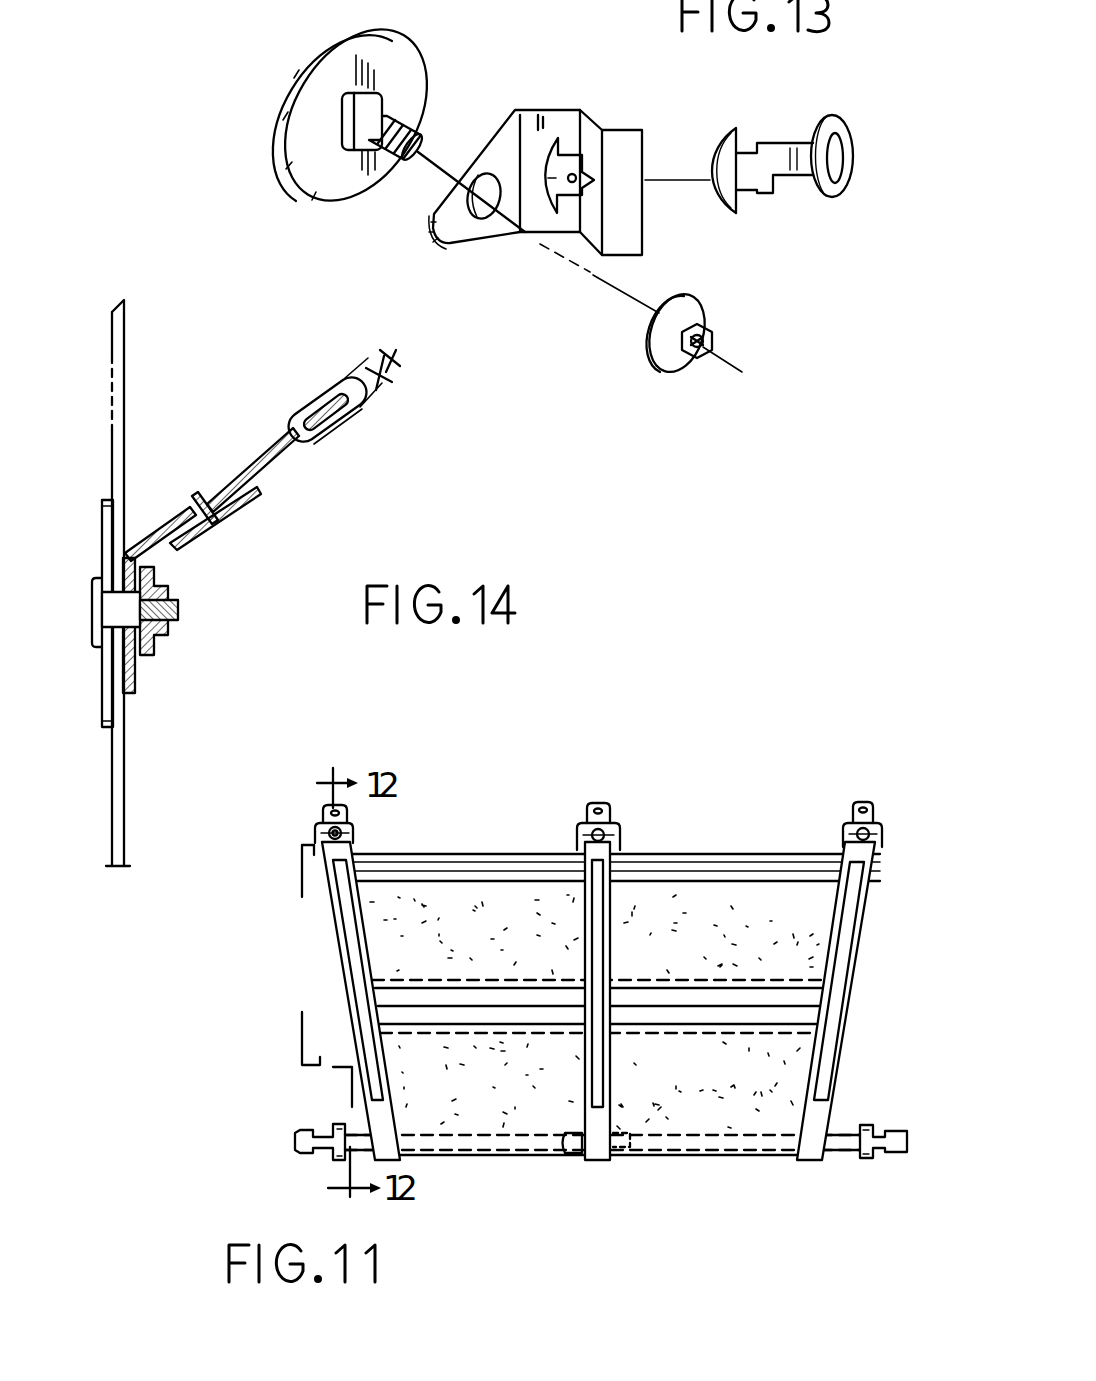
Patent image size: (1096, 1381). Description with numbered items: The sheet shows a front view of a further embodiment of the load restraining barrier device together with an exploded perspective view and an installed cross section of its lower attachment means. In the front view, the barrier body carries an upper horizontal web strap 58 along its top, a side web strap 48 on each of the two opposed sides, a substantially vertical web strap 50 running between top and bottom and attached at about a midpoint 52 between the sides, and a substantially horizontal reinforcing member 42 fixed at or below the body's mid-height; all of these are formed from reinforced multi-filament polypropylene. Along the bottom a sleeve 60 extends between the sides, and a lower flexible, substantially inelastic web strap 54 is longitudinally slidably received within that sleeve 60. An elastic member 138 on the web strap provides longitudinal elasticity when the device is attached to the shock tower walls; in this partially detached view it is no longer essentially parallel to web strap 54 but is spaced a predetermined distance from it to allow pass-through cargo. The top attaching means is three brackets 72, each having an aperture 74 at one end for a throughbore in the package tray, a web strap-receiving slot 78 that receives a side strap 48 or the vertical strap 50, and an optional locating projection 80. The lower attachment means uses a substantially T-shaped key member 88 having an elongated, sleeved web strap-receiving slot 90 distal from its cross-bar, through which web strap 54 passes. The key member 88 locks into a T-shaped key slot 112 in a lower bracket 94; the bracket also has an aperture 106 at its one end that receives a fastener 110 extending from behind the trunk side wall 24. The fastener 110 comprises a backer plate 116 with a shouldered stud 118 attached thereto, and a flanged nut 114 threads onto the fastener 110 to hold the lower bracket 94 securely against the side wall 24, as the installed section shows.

In FIG. 13, the backer plate 116 is at (403, 33).
In FIG. 14, the backer plate 116 is at (107, 727).
In FIG. 13, the shouldered stud 118 is at (422, 120).
In FIG. 14, the shouldered stud 118 is at (182, 607).
In FIG. 13, the lower bracket 94 is at (555, 108).
In FIG. 14, the lower bracket 94 is at (137, 693).
In FIG. 13, the aperture 106 is at (480, 218).
In FIG. 13, the T-shaped key slot 112 is at (577, 194).
In FIG. 13, the flanged nut 114 is at (703, 308).
In FIG. 14, the flanged nut 114 is at (165, 647).
In FIG. 13, the T-shaped key member 88 is at (777, 178).
In FIG. 14, the T-shaped key member 88 is at (282, 459).
In FIG. 11, the T-shaped key member 88 is at (893, 1133).
In FIG. 13, the fastener 110 is at (272, 212).
In FIG. 13, the web strap-receiving slot 90 is at (832, 156).
In FIG. 14, the web strap-receiving slot 90 is at (298, 427).
In FIG. 14, the web strap 54 is at (385, 375).
In FIG. 11, the web strap 54 is at (853, 1150).
In FIG. 14, the side wall 24 is at (122, 353).
In FIG. 11, the web strap-receiving slot 78 is at (327, 840).
In FIG. 11, the locating projection 80 is at (340, 805).
In FIG. 11, the upper horizontal web strap 58 is at (447, 858).
In FIG. 11, the bracket 72 is at (586, 804).
In FIG. 11, the vertical web strap 50 is at (610, 850).
In FIG. 11, the aperture 74 is at (855, 804).
In FIG. 11, the side web strap 48 is at (337, 922).
In FIG. 11, the reinforcing member 42 is at (848, 1033).
In FIG. 11, the midpoint 52 is at (606, 1164).
In FIG. 11, the sleeve 60 is at (763, 1143).
In FIG. 11, the elastic member 138 is at (565, 1146).